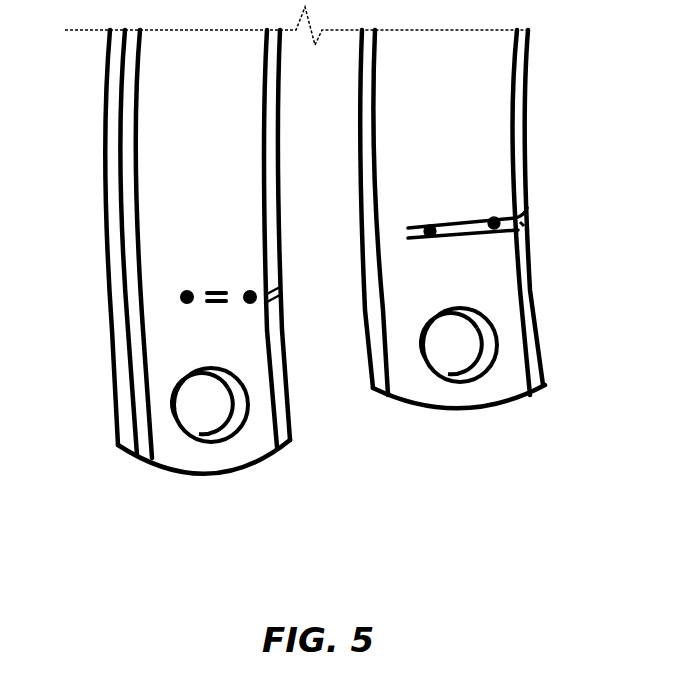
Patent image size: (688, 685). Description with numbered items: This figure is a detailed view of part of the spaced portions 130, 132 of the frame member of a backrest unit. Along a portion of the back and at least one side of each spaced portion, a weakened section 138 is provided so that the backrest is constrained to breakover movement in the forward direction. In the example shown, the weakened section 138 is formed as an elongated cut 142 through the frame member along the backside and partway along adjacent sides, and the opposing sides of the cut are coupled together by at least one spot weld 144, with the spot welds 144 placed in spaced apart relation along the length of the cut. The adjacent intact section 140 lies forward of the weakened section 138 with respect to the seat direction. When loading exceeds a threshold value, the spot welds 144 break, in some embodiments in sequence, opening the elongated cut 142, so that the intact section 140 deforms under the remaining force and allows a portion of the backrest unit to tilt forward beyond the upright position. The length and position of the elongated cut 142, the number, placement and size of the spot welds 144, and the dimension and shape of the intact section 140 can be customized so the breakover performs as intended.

The spaced portion 130 is at (153, 143).
The spaced portion 132 is at (495, 137).
The weakened section 138 is at (537, 210).
The intact section 140 is at (383, 238).
The elongated cut 142 is at (525, 225).
The spot weld 144 is at (430, 237).